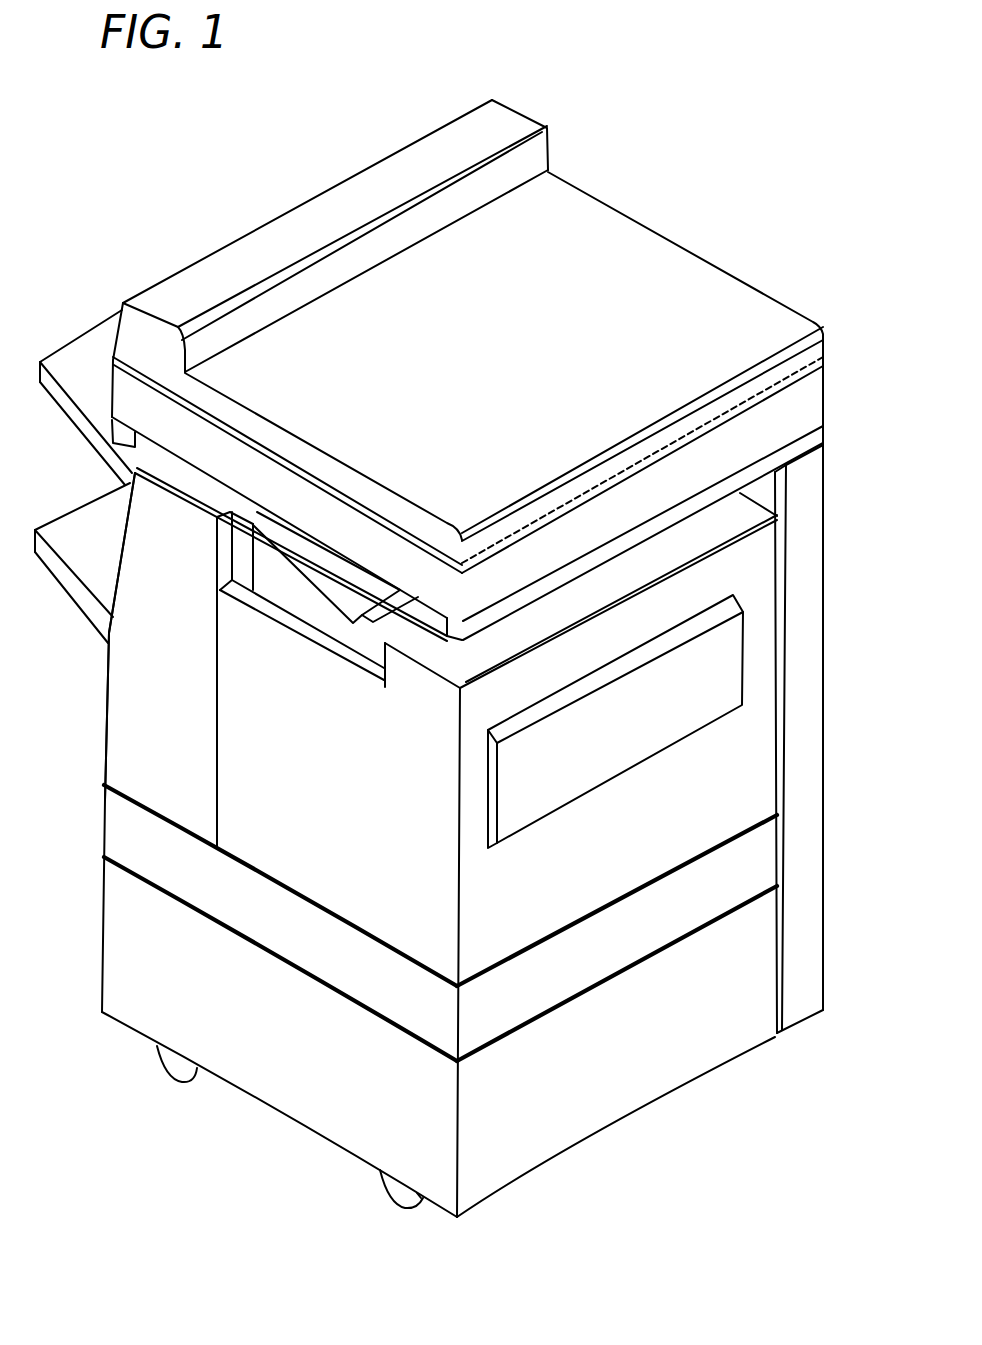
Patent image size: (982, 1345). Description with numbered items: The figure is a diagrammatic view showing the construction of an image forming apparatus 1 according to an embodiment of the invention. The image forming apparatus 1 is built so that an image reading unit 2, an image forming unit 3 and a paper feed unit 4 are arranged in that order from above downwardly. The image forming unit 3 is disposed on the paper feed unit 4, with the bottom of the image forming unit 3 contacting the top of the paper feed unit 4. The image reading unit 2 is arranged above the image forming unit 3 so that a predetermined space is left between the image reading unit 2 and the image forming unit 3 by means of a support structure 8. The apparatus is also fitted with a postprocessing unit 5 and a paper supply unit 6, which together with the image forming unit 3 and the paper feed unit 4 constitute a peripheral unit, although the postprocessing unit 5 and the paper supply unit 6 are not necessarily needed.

The image forming apparatus 1 is at (700, 171).
The image reading unit 2 is at (826, 391).
The image forming unit 3 is at (753, 757).
The paper feed unit 4 is at (105, 823).
The postprocessing unit 5 is at (113, 715).
The paper supply unit 6 is at (300, 607).
The support structure 8 is at (823, 623).